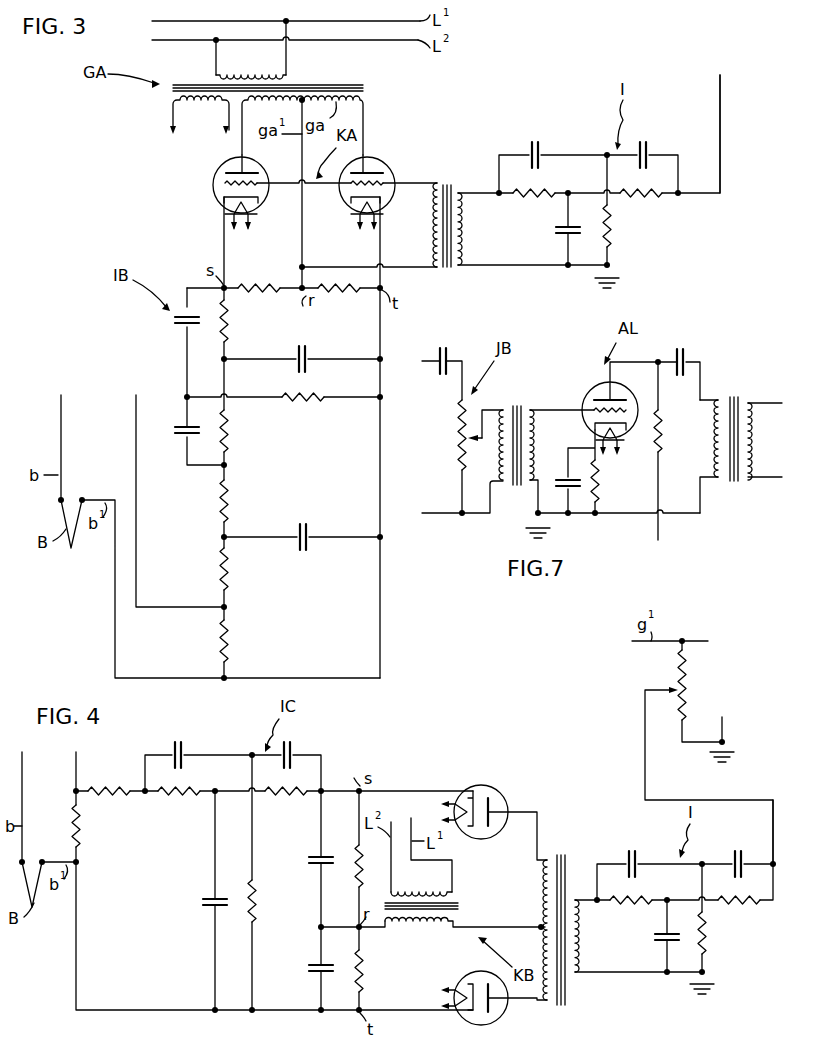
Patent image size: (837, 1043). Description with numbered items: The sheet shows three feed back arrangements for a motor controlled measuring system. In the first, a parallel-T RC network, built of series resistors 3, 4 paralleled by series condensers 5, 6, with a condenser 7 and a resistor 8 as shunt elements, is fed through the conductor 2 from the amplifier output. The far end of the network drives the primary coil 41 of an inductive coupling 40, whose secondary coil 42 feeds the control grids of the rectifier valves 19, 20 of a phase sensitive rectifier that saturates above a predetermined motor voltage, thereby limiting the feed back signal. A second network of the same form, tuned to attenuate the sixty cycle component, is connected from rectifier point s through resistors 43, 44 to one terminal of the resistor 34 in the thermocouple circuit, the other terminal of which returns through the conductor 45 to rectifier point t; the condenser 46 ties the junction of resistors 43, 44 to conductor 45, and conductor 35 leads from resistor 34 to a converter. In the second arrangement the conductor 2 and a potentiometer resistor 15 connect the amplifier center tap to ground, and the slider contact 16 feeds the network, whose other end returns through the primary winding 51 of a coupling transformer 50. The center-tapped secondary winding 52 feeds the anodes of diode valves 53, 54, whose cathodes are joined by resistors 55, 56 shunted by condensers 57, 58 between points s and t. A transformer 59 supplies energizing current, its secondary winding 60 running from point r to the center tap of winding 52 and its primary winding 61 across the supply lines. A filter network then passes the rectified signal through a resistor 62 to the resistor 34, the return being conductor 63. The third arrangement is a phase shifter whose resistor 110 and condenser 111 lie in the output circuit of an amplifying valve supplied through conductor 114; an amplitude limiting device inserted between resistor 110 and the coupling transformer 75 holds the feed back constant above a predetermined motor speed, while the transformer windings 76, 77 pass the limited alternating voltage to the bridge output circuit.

In FIG. 3, the conductor 2 is at (722, 97).
In FIG. 4, the conductor 2 is at (687, 647).
In FIG. 3, the resistor 3 is at (650, 198).
In FIG. 4, the resistor 3 is at (176, 795).
In FIG. 3, the resistor 4 is at (532, 199).
In FIG. 4, the resistor 4 is at (287, 795).
In FIG. 3, the condenser 5 is at (657, 140).
In FIG. 4, the condenser 5 is at (292, 742).
In FIG. 3, the condenser 6 is at (535, 139).
In FIG. 4, the condenser 6 is at (181, 741).
In FIG. 3, the condenser 7 is at (554, 231).
In FIG. 4, the condenser 7 is at (202, 898).
In FIG. 3, the resistor 8 is at (613, 231).
In FIG. 4, the resistor 8 is at (258, 892).
In FIG. 4, the potentiometer resistor 15 is at (676, 678).
In FIG. 4, the slider contact 16 is at (678, 696).
In FIG. 3, the rectifier valve 19 is at (220, 167).
In FIG. 3, the rectifier valve 20 is at (380, 167).
In FIG. 3, the resistor 34 is at (233, 645).
In FIG. 4, the resistor 34 is at (72, 826).
In FIG. 3, the conductor 35 is at (136, 505).
In FIG. 4, the conductor 35 is at (76, 767).
In FIG. 3, the inductive coupling 40 is at (445, 209).
In FIG. 3, the primary coil 41 is at (464, 224).
In FIG. 3, the secondary coil 42 is at (433, 234).
In FIG. 3, the resistor 43 is at (232, 503).
In FIG. 3, the resistor 44 is at (232, 572).
In FIG. 3, the conductor 45 is at (380, 465).
In FIG. 3, the condenser 46 is at (305, 524).
In FIG. 4, the coupling transformer 50 is at (559, 919).
In FIG. 4, the primary winding 51 is at (578, 936).
In FIG. 4, the secondary winding 52 is at (543, 887).
In FIG. 4, the valve 53 is at (502, 791).
In FIG. 4, the valve 54 is at (506, 1020).
In FIG. 4, the resistor 55 is at (357, 853).
In FIG. 4, the resistor 56 is at (363, 956).
In FIG. 4, the condenser 57 is at (309, 861).
In FIG. 4, the condenser 58 is at (307, 969).
In FIG. 4, the transformer 59 is at (465, 883).
In FIG. 4, the secondary winding 60 is at (426, 928).
In FIG. 4, the primary winding 61 is at (429, 890).
In FIG. 4, the resistor 62 is at (110, 795).
In FIG. 4, the conductor 63 is at (76, 941).
In FIG. 7, the coupling transformer 75 is at (735, 421).
In FIG. 7, the primary winding 76 is at (720, 437).
In FIG. 7, the secondary winding 77 is at (750, 440).
In FIG. 7, the resistor 110 is at (458, 433).
In FIG. 7, the condenser 111 is at (449, 348).
In FIG. 7, the conductor 114 is at (660, 535).